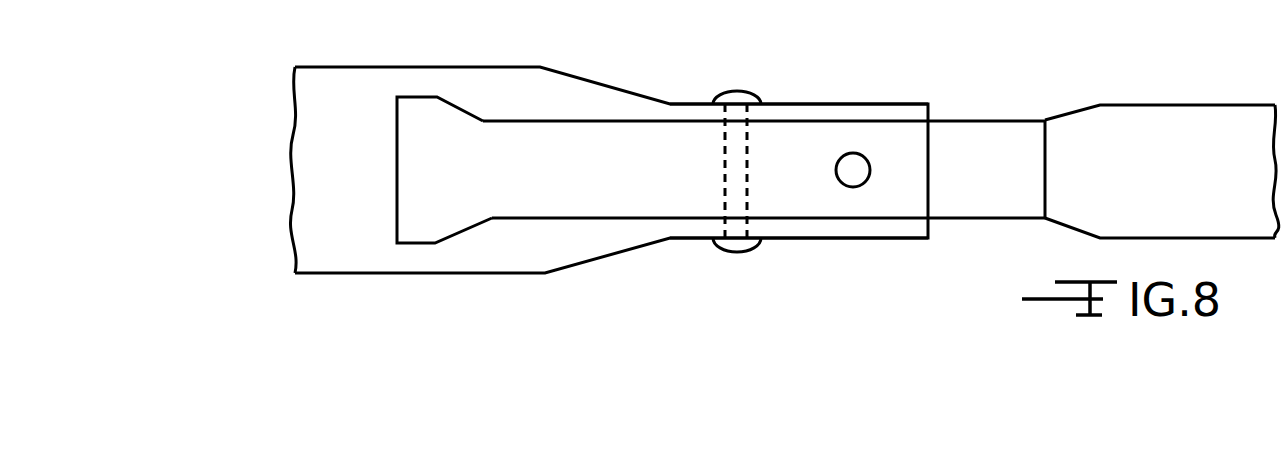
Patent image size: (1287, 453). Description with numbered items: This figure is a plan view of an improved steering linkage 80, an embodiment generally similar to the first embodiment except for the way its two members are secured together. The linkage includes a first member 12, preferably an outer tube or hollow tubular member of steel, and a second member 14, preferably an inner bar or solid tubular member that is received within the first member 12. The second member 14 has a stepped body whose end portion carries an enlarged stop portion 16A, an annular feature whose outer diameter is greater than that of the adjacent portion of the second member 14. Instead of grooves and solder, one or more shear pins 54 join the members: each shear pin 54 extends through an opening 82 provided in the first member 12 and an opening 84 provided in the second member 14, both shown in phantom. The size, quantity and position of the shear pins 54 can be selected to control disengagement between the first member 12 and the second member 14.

The first member 12 is at (600, 257).
The second member 14 is at (1136, 106).
The enlarged stop portion 16A is at (413, 178).
The shear pin 54 is at (732, 91).
The steering linkage 80 is at (971, 111).
The opening 82 is at (750, 112).
The opening 84 is at (747, 177).